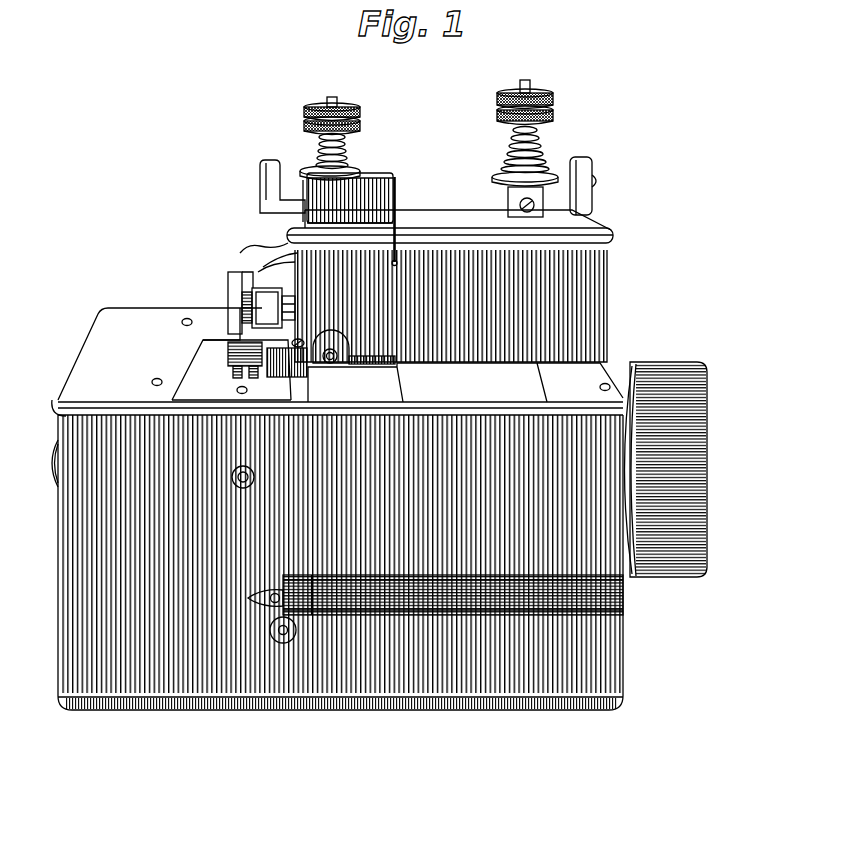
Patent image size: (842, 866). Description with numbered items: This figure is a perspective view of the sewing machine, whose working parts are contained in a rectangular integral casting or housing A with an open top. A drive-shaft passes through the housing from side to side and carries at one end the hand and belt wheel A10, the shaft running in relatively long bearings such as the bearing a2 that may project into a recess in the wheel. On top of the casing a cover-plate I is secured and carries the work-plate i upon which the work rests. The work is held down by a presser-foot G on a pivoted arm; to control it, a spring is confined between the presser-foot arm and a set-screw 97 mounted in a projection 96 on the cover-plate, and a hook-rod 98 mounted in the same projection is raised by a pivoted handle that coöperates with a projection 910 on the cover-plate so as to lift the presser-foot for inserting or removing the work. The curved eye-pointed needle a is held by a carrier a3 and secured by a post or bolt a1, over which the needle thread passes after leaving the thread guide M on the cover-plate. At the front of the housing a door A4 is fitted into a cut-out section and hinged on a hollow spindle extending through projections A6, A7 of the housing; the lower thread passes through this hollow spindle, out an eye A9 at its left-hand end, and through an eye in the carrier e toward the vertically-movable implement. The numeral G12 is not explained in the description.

The housing A is at (56, 597).
The door A4 is at (344, 490).
The projection of the housing A6 is at (623, 598).
The projection of the housing A7 is at (296, 636).
The eye A9 is at (250, 600).
The hand and belt wheel A10 is at (707, 414).
The cover-plate I is at (337, 362).
The work-plate i is at (225, 380).
The presser-foot G is at (410, 287).
The frame top plate G12 is at (496, 215).
The thread guide M is at (263, 186).
The eye-pointed needle a is at (243, 268).
The post or bolt a1 is at (337, 378).
The bearing a2 is at (358, 372).
The needle carrier a3 is at (268, 308).
The carrier e is at (354, 347).
The projection 96 is at (365, 174).
The set-screw 97 is at (345, 172).
The hook-rod 98 is at (393, 176).
The projection on the cover-plate 910 is at (398, 200).